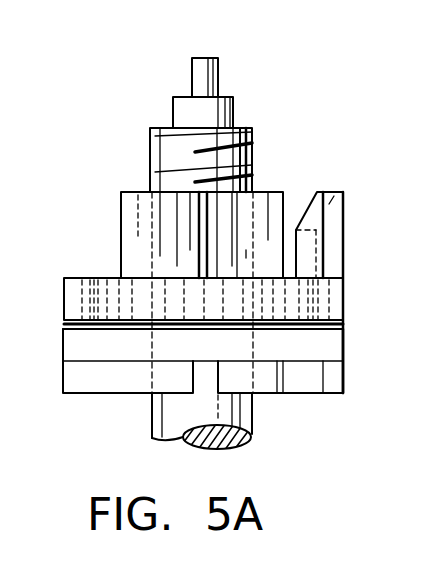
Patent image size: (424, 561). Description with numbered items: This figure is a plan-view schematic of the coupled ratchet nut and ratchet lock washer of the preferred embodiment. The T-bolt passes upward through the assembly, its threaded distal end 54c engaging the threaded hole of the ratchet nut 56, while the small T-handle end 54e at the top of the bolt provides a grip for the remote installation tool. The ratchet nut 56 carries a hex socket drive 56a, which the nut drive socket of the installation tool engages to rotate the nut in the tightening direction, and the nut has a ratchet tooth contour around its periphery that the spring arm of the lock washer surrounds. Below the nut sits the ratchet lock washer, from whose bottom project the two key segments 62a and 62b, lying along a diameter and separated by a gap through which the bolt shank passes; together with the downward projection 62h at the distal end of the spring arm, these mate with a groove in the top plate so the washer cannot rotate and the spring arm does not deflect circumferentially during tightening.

The T-handle end 54e is at (218, 72).
The threaded distal end of bolt shank 54c is at (253, 136).
The ratchet nut 56 is at (121, 224).
The hex socket drive 56a is at (290, 199).
The key segment 62a is at (93, 398).
The key segment 62b is at (305, 394).
The downward projection 62h is at (345, 381).